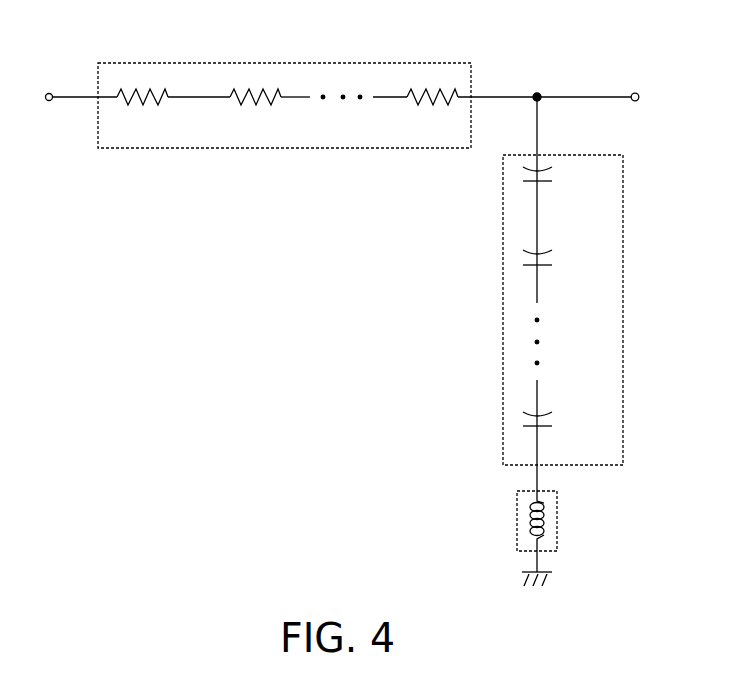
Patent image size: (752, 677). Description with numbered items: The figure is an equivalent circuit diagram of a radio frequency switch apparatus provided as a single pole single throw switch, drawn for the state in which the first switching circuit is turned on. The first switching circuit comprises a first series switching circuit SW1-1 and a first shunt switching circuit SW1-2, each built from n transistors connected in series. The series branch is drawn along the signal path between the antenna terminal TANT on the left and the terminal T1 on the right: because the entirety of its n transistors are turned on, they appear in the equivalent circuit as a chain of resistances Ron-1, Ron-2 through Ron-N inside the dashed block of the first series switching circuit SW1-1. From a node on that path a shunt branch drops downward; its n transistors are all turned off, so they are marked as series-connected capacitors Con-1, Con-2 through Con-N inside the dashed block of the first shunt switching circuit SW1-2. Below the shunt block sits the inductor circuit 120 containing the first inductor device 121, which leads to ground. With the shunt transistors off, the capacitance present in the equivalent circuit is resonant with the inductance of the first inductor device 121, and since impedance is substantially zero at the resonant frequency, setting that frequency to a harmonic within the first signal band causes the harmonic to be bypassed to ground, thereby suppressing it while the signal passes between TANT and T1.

The inductor circuit 120 is at (561, 517).
The first inductor device 121 is at (543, 519).
The first series switching circuit SW1-1 is at (284, 86).
The first shunt switching circuit SW1-2 is at (623, 200).
The resistance Ron-1 is at (142, 113).
The resistance Ron-2 is at (255, 113).
The resistance Ron-N is at (433, 113).
The capacitor Con-1 is at (565, 188).
The capacitor Con-2 is at (565, 273).
The capacitor Con-N is at (566, 434).
The antenna terminal TANT is at (49, 82).
The first terminal T1 is at (634, 82).